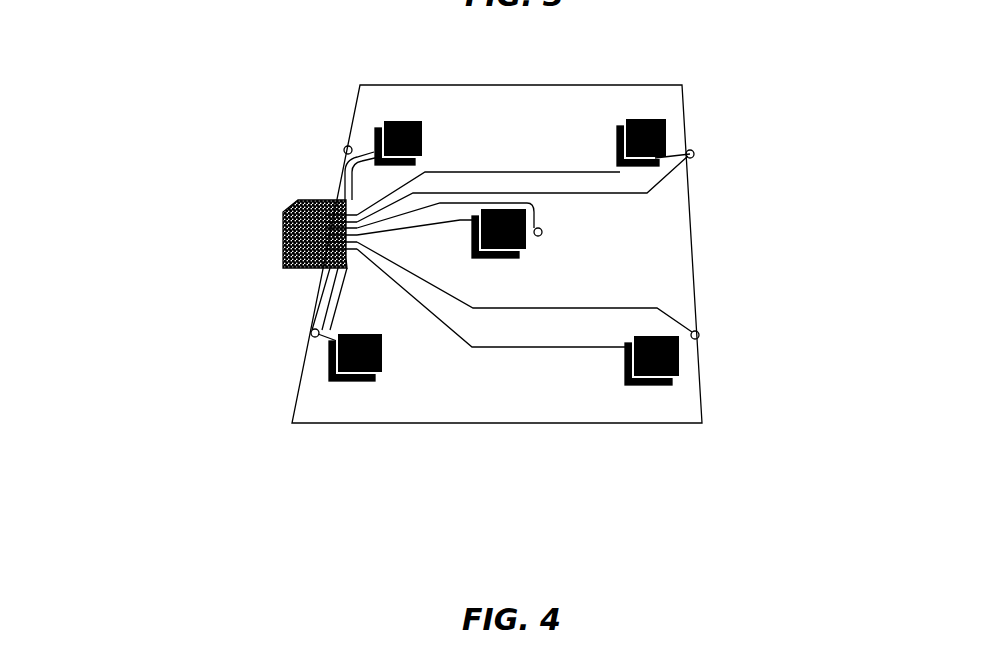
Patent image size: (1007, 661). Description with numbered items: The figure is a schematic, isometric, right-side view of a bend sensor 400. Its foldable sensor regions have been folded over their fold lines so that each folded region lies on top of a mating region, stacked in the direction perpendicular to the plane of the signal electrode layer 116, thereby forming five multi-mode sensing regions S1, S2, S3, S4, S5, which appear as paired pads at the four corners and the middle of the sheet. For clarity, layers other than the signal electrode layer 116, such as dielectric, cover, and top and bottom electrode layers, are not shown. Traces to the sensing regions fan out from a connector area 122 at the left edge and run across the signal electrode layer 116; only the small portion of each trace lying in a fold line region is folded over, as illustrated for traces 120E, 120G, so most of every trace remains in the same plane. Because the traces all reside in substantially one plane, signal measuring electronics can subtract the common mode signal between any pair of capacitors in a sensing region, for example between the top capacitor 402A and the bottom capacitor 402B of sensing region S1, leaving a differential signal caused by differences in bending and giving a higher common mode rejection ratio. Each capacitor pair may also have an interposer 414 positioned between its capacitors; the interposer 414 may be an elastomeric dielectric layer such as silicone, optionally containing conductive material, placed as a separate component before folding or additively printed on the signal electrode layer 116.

The bend sensor 400 is at (276, 28).
The signal electrode layer 116 is at (380, 408).
The connector 122 is at (310, 222).
The trace 120G is at (330, 287).
The trace 120E is at (700, 343).
The top capacitor 402A is at (665, 128).
The bottom capacitor 402B is at (648, 166).
The interposer 414 is at (688, 165).
The multi-mode sensing region S1 is at (660, 98).
The multi-mode sensing region S2 is at (562, 249).
The multi-mode sensing region S3 is at (683, 397).
The multi-mode sensing region S4 is at (318, 379).
The multi-mode sensing region S5 is at (330, 120).